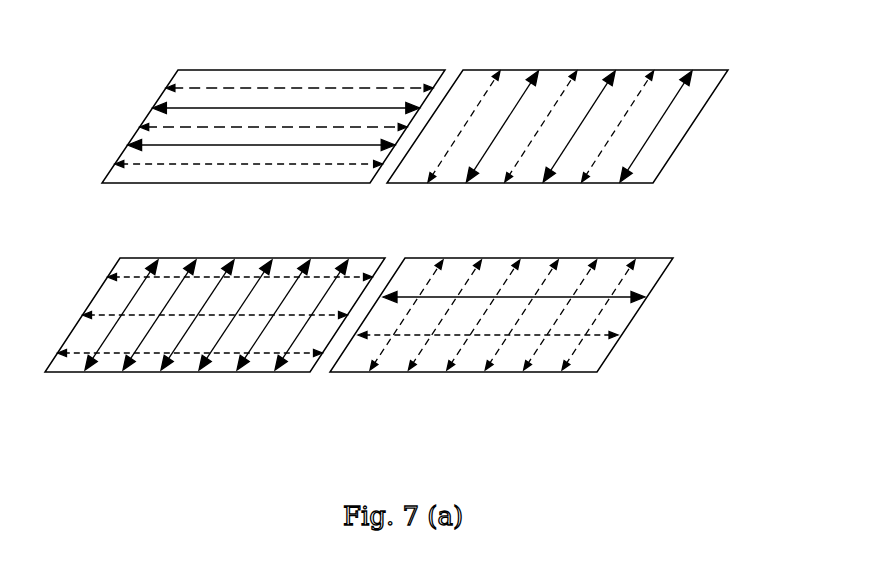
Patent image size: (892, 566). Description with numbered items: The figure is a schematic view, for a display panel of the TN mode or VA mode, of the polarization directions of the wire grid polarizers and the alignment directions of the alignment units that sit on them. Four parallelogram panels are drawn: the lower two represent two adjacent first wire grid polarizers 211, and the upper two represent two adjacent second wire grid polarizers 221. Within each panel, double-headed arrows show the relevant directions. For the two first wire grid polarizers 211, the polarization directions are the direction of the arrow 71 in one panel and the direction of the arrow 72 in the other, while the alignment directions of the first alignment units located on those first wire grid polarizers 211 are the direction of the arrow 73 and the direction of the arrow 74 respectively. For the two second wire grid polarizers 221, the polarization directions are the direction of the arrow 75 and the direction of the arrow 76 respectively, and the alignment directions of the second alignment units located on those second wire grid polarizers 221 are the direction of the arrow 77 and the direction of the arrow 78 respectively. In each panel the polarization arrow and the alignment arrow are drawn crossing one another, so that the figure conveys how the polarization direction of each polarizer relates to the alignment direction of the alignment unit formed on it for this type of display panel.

The second wire grid polarizer 221 is at (272, 70).
The first wire grid polarizer 211 is at (182, 372).
The arrow 75 is at (223, 88).
The arrow 77 is at (273, 146).
The arrow 76 is at (463, 127).
The arrow 78 is at (575, 127).
The arrow 71 is at (137, 316).
The arrow 73 is at (267, 333).
The arrow 72 is at (427, 343).
The arrow 74 is at (588, 298).